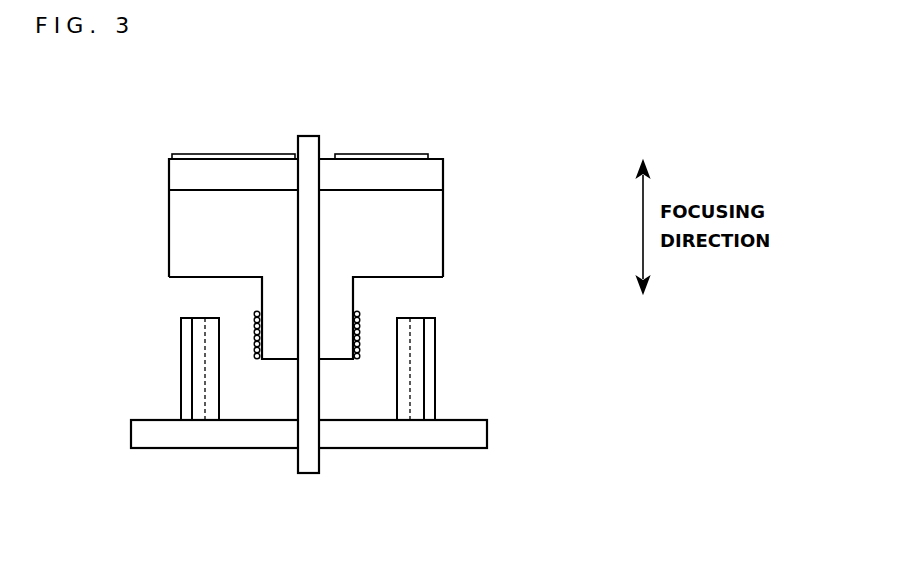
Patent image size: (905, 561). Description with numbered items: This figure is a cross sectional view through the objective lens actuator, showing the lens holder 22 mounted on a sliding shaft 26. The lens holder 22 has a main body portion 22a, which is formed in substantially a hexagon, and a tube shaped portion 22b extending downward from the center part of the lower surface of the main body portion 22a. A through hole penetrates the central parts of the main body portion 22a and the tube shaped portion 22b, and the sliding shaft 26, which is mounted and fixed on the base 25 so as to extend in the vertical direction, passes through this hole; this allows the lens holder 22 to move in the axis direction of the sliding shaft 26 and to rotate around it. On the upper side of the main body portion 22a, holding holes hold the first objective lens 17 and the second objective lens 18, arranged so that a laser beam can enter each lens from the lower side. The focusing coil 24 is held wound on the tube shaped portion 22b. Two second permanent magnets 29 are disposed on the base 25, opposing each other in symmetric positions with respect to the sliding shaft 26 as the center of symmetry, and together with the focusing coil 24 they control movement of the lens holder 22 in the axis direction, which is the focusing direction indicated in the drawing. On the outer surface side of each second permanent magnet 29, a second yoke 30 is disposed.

The first objective lens 17 is at (225, 154).
The second objective lens 18 is at (398, 154).
The lens holder 22 is at (375, 259).
The main body portion 22a is at (412, 239).
The tube shaped portion 22b is at (347, 294).
The focusing coil 24 is at (257, 326).
The base 25 is at (362, 440).
The sliding shaft 26 is at (308, 140).
The second permanent magnets 29 is at (197, 323).
The second yokes 30 is at (184, 357).